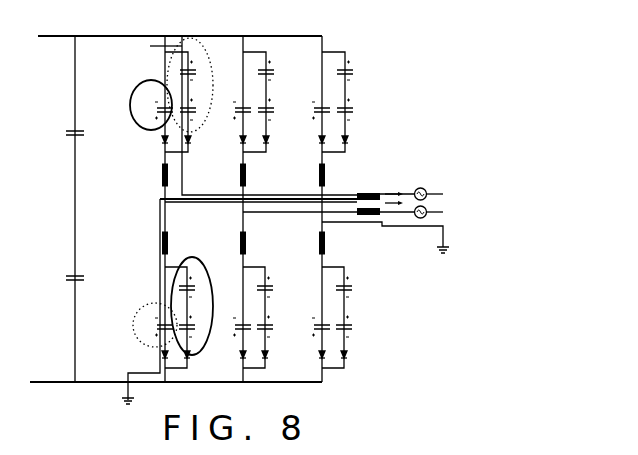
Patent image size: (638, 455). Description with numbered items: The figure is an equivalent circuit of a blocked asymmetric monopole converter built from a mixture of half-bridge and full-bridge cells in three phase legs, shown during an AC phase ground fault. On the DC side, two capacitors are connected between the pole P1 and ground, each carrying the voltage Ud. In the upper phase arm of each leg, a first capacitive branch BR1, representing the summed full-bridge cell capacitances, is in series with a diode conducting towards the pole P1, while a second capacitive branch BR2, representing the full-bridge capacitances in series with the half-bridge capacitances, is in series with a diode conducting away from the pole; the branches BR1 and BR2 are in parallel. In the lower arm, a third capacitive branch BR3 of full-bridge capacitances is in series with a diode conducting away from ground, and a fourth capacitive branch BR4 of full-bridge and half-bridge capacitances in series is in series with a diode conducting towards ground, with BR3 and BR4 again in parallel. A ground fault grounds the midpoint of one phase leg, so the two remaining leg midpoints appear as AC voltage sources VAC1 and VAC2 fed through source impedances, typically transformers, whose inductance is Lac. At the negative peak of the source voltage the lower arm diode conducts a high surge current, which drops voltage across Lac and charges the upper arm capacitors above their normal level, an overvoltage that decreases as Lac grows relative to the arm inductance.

The first pole P1 is at (180, 18).
The capacitor voltage Ud is at (58, 209).
The first capacitive branch BR1 is at (130, 133).
The second capacitive branch BR2 is at (162, 66).
The third capacitive branch BR3 is at (136, 302).
The fourth capacitive branch BR4 is at (218, 240).
The source inductance Lac is at (378, 188).
The first AC voltage source VAC1 is at (435, 181).
The second AC voltage source VAC2 is at (439, 212).